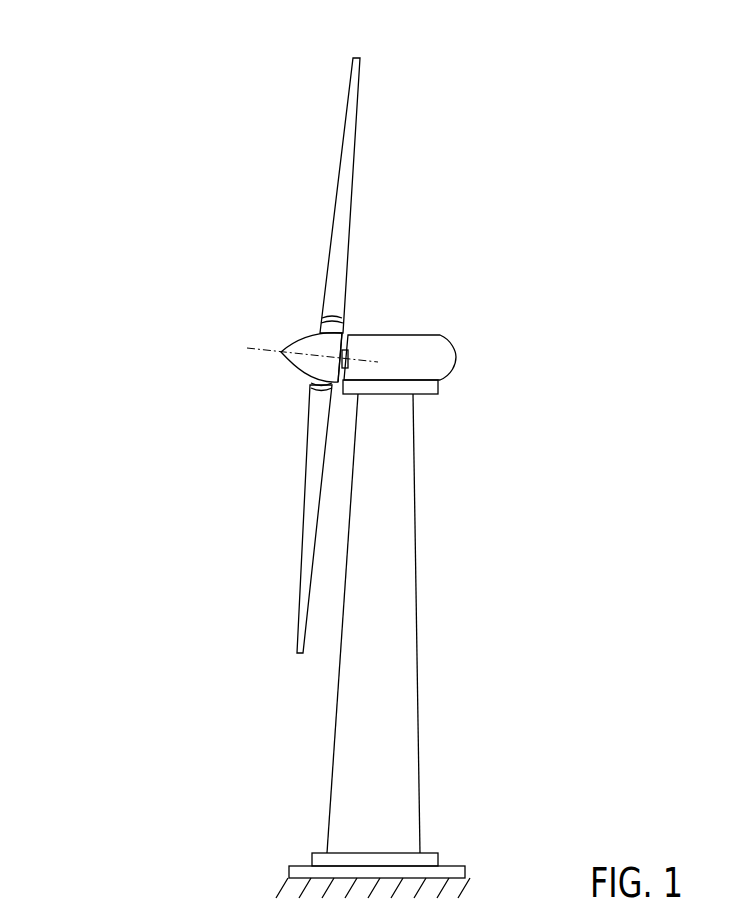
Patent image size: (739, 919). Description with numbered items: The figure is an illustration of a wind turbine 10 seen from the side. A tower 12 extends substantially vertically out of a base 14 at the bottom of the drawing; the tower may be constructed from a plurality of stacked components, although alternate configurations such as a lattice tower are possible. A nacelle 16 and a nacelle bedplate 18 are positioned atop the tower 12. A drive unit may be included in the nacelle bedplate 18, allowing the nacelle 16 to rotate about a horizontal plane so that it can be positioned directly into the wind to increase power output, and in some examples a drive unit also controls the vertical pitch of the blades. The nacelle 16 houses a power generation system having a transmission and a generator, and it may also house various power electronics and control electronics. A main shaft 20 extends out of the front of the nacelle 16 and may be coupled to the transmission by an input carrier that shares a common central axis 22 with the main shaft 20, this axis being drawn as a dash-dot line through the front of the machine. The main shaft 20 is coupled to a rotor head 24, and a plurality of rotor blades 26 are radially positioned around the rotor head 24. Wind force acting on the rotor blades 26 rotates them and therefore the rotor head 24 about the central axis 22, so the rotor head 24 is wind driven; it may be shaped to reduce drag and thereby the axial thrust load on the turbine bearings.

The wind turbine 10 is at (138, 46).
The tower 12 is at (414, 459).
The base 14 is at (452, 866).
The nacelle 16 is at (447, 297).
The nacelle bedplate 18 is at (438, 388).
The main shaft 20 is at (346, 360).
The central axis 22 is at (273, 350).
The rotor head 24 is at (307, 339).
The rotor blades 26 is at (329, 264).